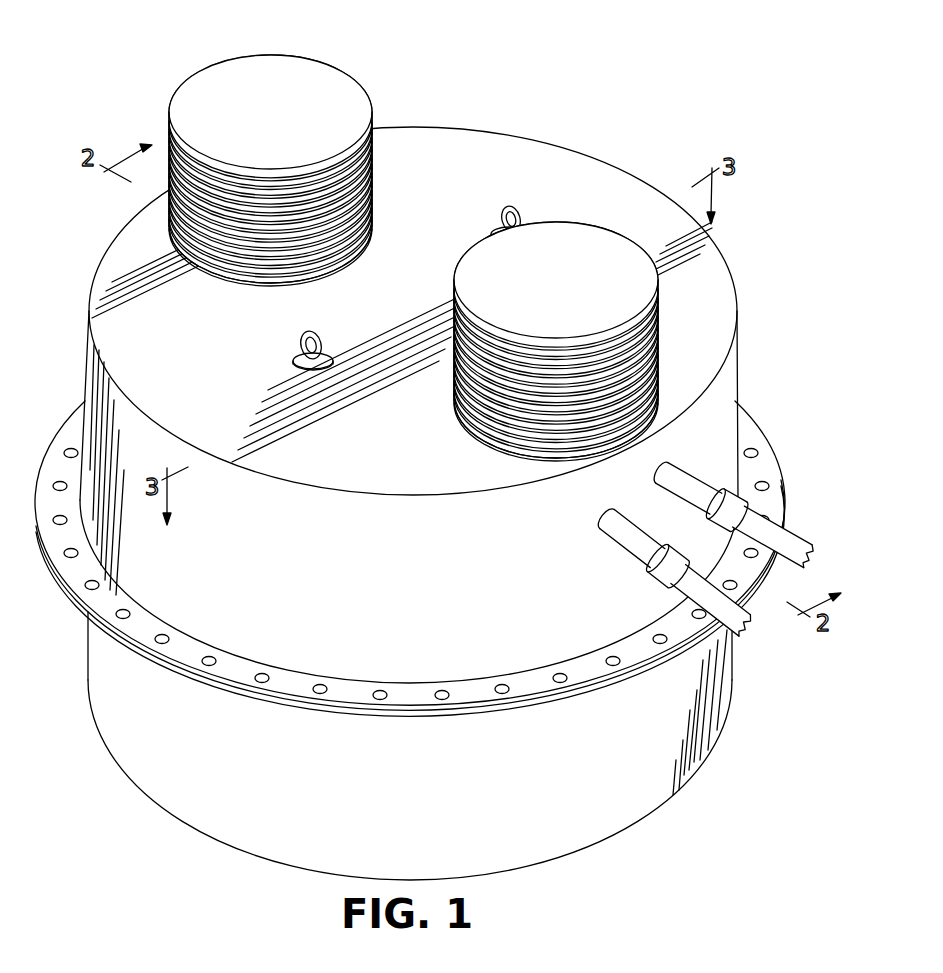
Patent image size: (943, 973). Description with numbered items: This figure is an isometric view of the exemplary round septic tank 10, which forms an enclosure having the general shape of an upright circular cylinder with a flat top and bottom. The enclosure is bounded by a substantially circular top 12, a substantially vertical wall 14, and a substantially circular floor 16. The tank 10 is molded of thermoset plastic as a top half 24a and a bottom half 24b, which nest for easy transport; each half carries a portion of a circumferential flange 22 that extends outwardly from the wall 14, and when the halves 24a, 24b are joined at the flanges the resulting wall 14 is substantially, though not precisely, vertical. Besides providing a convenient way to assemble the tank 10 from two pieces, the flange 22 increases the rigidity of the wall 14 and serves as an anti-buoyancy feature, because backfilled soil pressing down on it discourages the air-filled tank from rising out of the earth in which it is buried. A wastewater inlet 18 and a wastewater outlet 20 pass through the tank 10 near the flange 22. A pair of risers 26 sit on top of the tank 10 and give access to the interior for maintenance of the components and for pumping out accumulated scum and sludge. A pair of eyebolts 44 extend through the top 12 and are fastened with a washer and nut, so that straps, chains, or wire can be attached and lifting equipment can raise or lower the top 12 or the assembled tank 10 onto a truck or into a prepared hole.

The round septic tank 10 is at (580, 125).
The top 12 is at (472, 143).
The wall 14 is at (412, 746).
The floor 16 is at (560, 857).
The wastewater inlet 18 is at (800, 530).
The wastewater outlet 20 is at (636, 561).
The circumferential flange 22 is at (43, 447).
The top half 24a is at (737, 362).
The bottom half 24b is at (732, 680).
The risers 26 is at (271, 55).
The eyebolts 44 is at (311, 332).